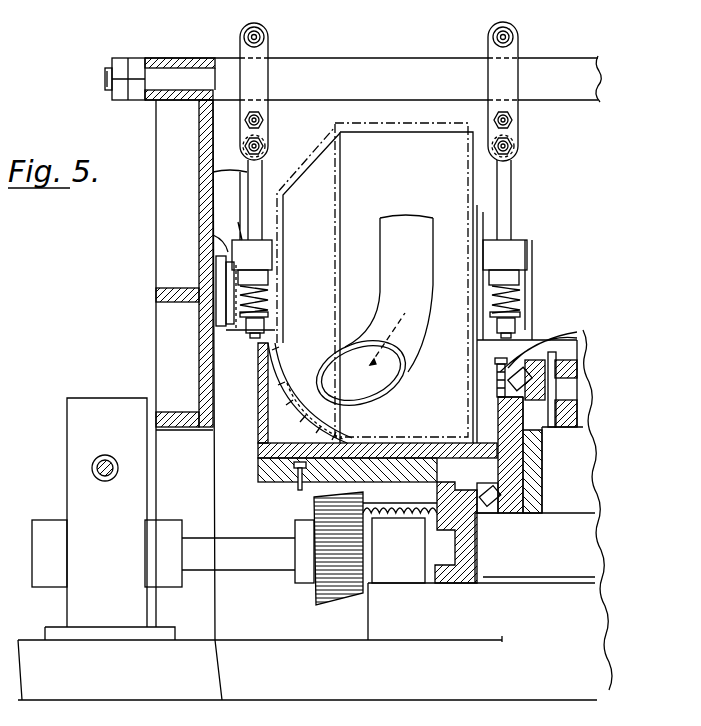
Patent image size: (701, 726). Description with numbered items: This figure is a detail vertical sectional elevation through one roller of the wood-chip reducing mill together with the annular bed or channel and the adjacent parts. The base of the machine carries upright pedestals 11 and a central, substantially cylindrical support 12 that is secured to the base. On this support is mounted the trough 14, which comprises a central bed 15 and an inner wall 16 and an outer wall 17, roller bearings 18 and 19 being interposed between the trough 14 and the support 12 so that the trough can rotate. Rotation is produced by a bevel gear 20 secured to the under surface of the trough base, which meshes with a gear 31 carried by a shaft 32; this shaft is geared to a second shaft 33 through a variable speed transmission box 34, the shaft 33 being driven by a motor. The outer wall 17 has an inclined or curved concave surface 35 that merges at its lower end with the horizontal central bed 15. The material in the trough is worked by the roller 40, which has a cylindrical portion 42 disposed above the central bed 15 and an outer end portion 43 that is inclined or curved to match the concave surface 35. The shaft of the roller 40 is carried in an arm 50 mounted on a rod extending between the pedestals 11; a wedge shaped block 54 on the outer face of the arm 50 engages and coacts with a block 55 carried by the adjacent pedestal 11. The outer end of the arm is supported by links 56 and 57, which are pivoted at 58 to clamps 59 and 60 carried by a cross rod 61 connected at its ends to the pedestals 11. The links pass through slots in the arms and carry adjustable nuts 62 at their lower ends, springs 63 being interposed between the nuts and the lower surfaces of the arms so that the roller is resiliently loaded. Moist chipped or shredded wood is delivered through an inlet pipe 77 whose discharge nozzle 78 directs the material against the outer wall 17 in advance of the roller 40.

The pedestal 11 is at (156, 340).
The cylindrical support 12 is at (535, 462).
The trough 14 is at (402, 470).
The central bed 15 is at (440, 446).
The inner wall 16 is at (497, 382).
The outer wall 17 is at (266, 380).
The roller bearing 18 is at (527, 350).
The roller bearing 19 is at (520, 489).
The bevel gear 20 is at (406, 512).
The gear 31 is at (347, 590).
The shaft 32 is at (250, 538).
The shaft 33 is at (91, 469).
The variable speed transmission box 34 is at (80, 421).
The concave surface 35 is at (292, 408).
The roller 40 is at (478, 210).
The cylindrical portion 42 is at (386, 130).
The outer end portion 43 is at (320, 150).
The arm 50 is at (232, 206).
The wedge shaped block 54 is at (226, 243).
The block 55 is at (216, 262).
The link 56 is at (213, 172).
The link 57 is at (512, 181).
The pivot 58 is at (246, 146).
The clamp 59 is at (268, 43).
The clamp 60 is at (518, 40).
The cross rod 61 is at (545, 60).
The adjustable nut 62 is at (246, 333).
The spring 63 is at (244, 300).
The inlet pipe 77 is at (384, 255).
The nozzle 78 is at (332, 368).